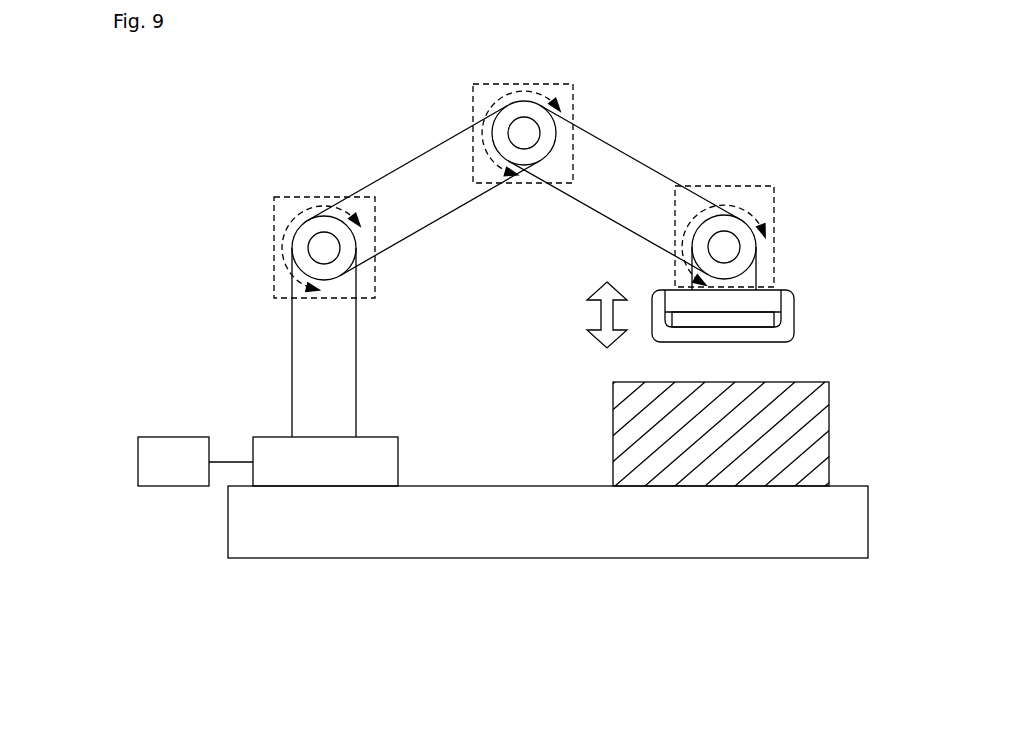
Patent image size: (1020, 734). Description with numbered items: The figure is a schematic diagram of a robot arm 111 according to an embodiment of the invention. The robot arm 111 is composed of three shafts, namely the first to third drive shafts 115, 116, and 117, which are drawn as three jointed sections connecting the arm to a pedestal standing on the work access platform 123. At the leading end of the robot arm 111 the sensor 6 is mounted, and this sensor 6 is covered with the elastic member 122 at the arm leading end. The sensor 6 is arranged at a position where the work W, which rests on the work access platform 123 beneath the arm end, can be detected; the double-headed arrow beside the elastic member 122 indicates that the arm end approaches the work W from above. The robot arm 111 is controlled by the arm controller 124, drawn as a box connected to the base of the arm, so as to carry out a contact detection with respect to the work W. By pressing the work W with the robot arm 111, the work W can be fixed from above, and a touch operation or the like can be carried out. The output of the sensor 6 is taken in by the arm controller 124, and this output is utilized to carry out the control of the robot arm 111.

The robot arm 111 is at (683, 98).
The first drive shaft 115 is at (774, 200).
The second drive shaft 116 is at (575, 97).
The third drive shaft 117 is at (273, 216).
The elastic member 122 is at (750, 337).
The sensor 6 is at (765, 320).
The work W is at (829, 403).
The work access platform 123 is at (486, 486).
The arm controller 124 is at (170, 437).